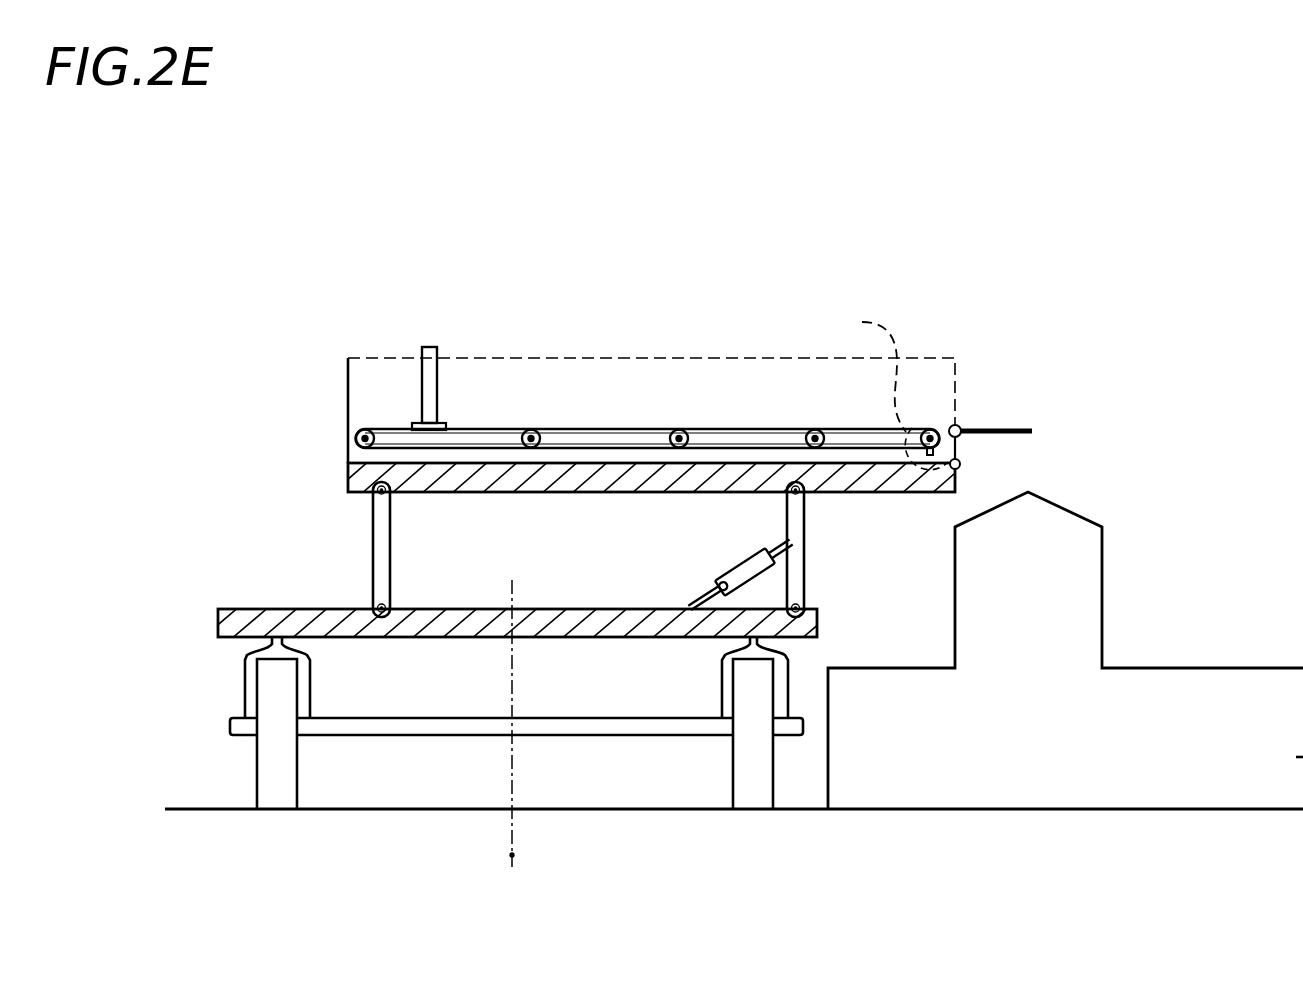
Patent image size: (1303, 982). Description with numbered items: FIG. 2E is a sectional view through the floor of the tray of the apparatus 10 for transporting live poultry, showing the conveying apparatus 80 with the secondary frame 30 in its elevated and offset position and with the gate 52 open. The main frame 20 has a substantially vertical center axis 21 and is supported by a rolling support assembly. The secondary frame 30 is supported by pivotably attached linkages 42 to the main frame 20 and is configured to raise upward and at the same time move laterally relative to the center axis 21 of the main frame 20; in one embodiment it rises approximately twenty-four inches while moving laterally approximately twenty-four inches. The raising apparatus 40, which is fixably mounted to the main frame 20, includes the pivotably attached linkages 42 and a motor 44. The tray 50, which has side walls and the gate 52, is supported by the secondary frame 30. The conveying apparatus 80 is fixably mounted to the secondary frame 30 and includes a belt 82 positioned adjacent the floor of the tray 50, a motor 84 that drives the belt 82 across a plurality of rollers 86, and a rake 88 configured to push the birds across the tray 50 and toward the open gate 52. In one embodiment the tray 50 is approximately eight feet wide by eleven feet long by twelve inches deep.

The apparatus 10 is at (224, 272).
The main frame 20 is at (820, 620).
The center axis 21 is at (515, 855).
The secondary frame 30 is at (347, 476).
The raising apparatus 40 is at (714, 547).
The pivotably attached linkages 42 is at (390, 568).
The motor 44 is at (718, 585).
The tray 50 is at (347, 455).
The gate 52 is at (995, 430).
The conveying apparatus 80 is at (512, 260).
The belt 82 is at (565, 428).
The motor 84 is at (883, 388).
The rollers 86 is at (680, 430).
The rake 88 is at (428, 345).